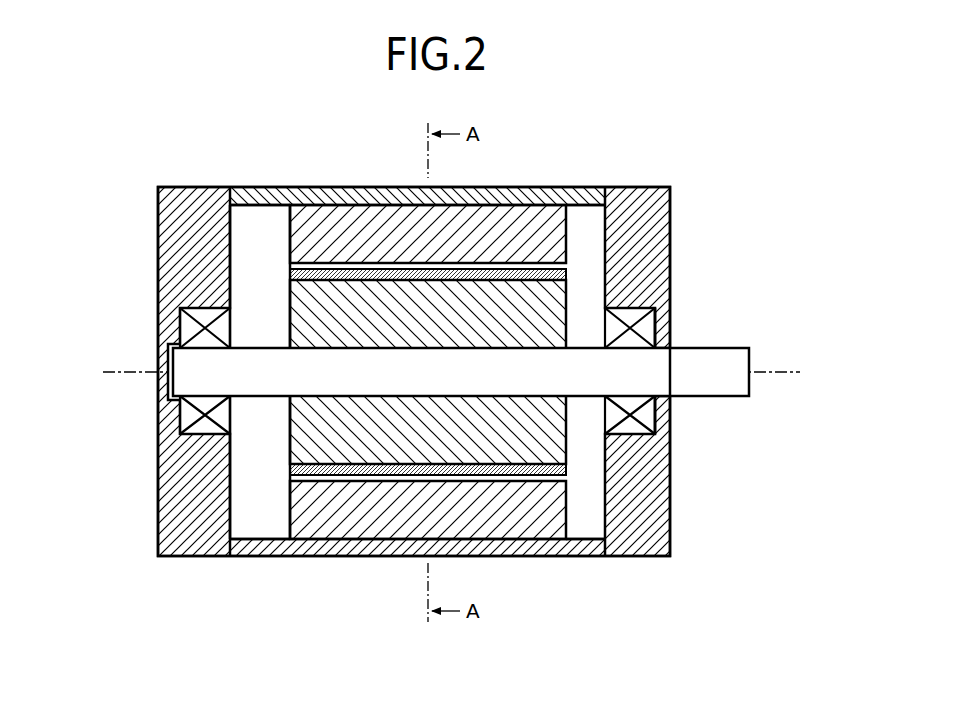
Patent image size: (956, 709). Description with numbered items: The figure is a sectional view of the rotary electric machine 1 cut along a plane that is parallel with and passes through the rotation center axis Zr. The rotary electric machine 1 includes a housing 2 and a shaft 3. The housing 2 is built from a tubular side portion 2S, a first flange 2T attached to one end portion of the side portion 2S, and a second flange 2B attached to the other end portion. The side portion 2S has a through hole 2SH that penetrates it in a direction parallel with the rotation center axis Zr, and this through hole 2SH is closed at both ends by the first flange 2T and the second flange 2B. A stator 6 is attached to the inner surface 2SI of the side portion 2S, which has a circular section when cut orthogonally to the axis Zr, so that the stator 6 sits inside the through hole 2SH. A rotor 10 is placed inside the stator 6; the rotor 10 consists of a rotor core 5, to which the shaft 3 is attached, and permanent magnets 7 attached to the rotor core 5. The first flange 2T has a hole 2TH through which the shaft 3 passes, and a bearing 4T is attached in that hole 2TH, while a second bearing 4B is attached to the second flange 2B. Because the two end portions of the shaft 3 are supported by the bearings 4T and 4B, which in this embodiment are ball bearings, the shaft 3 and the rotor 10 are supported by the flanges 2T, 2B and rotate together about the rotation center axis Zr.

The rotary electric machine 1 is at (759, 148).
The housing 2 is at (422, 406).
The second flange 2B is at (199, 557).
The side portion 2S is at (331, 557).
The first flange 2T is at (642, 557).
The through hole 2SH is at (268, 246).
The inner surface 2SI is at (252, 215).
The hole 2TH is at (698, 375).
The shaft 3 is at (716, 358).
The bearing 4B is at (190, 328).
The bearing 4T is at (628, 318).
The rotor core 5 is at (300, 445).
The stator 6 is at (573, 490).
The permanent magnets 7 is at (407, 384).
The rotor 10 is at (340, 386).
The rotation center axis Zr is at (467, 373).